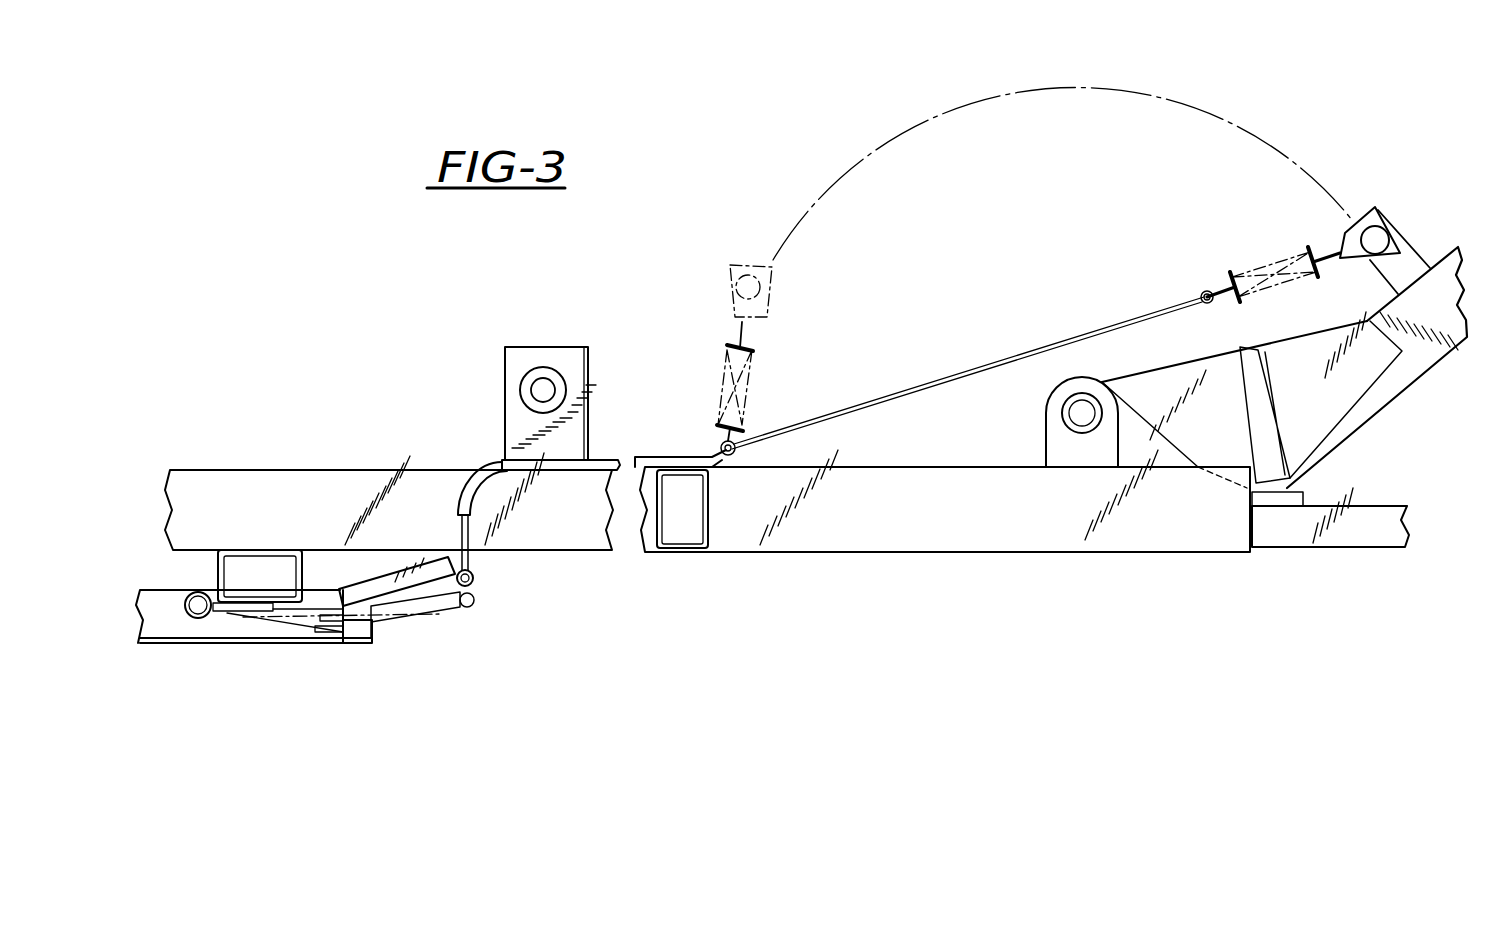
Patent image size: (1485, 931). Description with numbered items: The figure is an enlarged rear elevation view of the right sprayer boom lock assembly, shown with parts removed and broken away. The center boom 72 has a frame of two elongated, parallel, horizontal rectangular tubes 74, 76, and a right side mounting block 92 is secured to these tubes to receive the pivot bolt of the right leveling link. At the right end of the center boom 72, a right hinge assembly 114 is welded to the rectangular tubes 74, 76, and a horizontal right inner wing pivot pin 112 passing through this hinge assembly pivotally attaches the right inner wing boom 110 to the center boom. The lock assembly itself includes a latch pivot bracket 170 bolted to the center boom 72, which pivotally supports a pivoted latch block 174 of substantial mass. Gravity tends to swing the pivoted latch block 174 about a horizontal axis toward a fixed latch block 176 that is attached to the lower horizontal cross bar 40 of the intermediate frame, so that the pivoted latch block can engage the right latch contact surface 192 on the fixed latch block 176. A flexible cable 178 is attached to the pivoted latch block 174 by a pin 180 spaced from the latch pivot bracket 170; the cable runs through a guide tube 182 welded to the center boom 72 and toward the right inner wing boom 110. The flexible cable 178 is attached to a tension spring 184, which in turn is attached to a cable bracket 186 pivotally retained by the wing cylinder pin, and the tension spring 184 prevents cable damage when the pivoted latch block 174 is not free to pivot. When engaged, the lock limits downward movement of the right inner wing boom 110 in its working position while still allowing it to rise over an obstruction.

The lower horizontal cross bar 40 is at (267, 643).
The center boom 72 is at (245, 470).
The rectangular tube 74 is at (835, 535).
The rectangular tube 76 is at (350, 485).
The right side mounting block 92 is at (505, 378).
The right inner wing boom 110 is at (1293, 532).
The right inner wing pivot pin 112 is at (1082, 415).
The right hinge assembly 114 is at (1022, 432).
The latch pivot bracket 170 is at (222, 615).
The pivoted latch block 174 is at (450, 595).
The fixed latch block 176 is at (373, 643).
The flexible cable 178 is at (970, 368).
The pin 180 is at (475, 578).
The guide tube 182 is at (506, 469).
The tension spring 184 is at (1228, 285).
The cable bracket 186 is at (1342, 238).
The right latch contact surface 192 is at (335, 632).